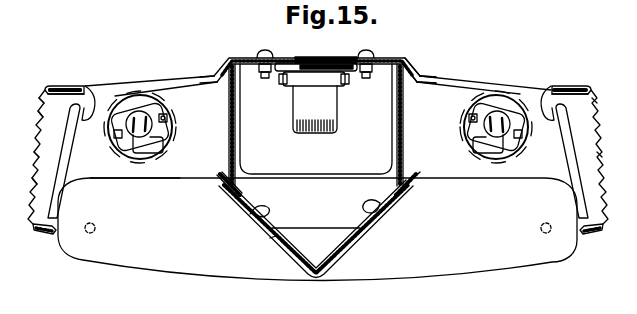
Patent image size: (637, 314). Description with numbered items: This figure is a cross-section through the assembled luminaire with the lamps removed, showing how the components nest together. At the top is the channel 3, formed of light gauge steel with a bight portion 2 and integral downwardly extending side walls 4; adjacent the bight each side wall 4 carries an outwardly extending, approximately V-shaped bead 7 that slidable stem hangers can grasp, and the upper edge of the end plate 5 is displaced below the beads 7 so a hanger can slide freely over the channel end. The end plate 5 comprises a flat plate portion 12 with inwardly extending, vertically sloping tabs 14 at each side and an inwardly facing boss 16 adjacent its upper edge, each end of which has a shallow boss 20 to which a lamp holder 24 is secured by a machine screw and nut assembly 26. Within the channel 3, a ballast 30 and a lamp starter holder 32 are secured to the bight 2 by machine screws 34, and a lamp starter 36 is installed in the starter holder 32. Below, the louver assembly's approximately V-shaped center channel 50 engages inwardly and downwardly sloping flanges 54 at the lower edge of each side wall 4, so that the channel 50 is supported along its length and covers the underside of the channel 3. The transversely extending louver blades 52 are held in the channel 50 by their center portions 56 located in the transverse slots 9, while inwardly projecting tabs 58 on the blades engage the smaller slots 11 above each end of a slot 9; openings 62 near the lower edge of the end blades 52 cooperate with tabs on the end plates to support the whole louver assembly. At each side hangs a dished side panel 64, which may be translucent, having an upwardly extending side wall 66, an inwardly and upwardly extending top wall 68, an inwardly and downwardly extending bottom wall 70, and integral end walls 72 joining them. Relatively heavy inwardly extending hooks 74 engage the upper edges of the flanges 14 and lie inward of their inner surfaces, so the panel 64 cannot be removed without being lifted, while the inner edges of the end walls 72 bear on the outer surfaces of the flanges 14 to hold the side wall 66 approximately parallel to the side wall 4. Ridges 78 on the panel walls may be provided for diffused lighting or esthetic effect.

The bight portion 2 is at (387, 59).
The channel 3 is at (218, 59).
The side wall 4 is at (236, 138).
The end plate 5 is at (89, 166).
The bead 7 is at (214, 70).
The slot 9 is at (272, 238).
The slot 11 is at (253, 213).
The flat plate portion 12 is at (535, 91).
The tab (flange) 14 is at (44, 155).
The boss 16 is at (182, 160).
The shallow boss 20 is at (129, 96).
The lamp holder 24 is at (168, 137).
The machine screw and nut assembly 26 is at (168, 120).
The ballast 30 is at (310, 168).
The lamp starter holder 32 is at (300, 60).
The machine screw 34 is at (272, 56).
The lamp starter 36 is at (335, 108).
The center channel 50 is at (352, 245).
The louver blade 52 is at (248, 268).
The flange 54 is at (237, 185).
The center portion 56 is at (306, 232).
The tab 58 is at (266, 208).
The opening 62 is at (97, 229).
The side panel 64 is at (67, 119).
The side wall 66 is at (41, 139).
The top wall 68 is at (66, 88).
The bottom wall 70 is at (320, 244).
The end wall 72 is at (47, 198).
The hook 74 is at (87, 108).
The ridge 78 is at (33, 183).